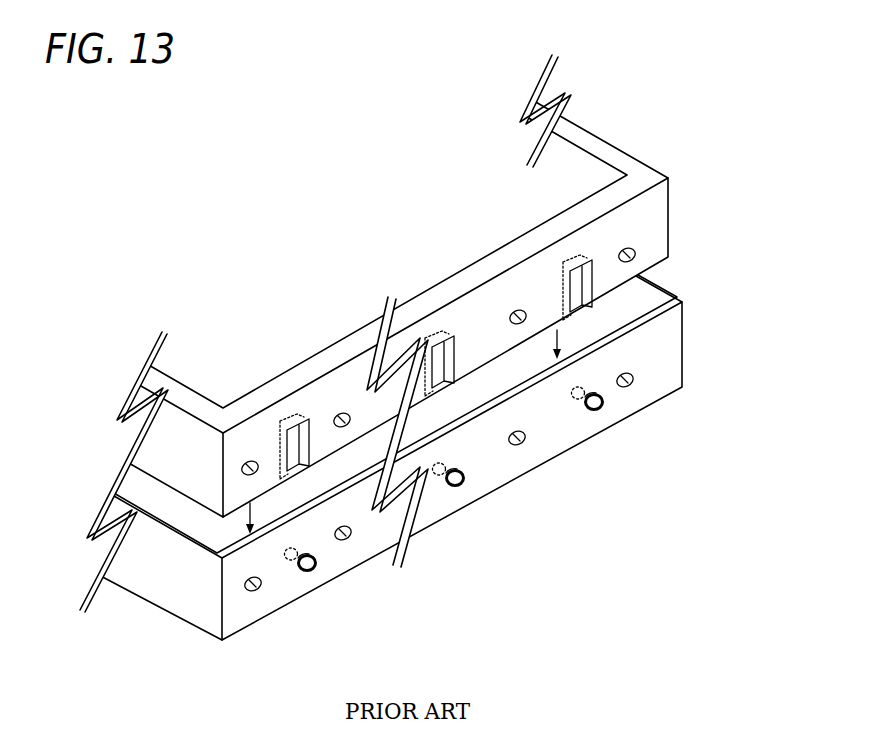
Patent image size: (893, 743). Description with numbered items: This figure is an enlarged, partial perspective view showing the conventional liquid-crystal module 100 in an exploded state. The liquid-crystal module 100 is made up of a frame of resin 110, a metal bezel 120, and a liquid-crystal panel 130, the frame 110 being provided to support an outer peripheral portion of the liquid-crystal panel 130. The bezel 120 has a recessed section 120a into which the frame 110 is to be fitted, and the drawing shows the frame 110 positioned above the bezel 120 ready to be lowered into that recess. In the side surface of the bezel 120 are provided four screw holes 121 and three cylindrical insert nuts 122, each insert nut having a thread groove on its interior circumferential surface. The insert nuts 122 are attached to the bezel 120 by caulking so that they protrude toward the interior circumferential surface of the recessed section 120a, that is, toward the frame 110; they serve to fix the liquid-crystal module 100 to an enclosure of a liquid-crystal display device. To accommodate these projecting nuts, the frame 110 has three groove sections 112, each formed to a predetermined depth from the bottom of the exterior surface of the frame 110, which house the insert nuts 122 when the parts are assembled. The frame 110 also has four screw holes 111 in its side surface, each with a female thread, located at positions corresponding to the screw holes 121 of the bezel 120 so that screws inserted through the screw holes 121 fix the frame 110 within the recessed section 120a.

The liquid-crystal module 100 is at (630, 130).
The frame 110 is at (655, 218).
The screw holes 111 is at (636, 254).
The groove sections 112 is at (579, 308).
The bezel 120 is at (670, 334).
The recessed section 120a is at (644, 303).
The screw holes 121 is at (628, 386).
The insert nuts 122 is at (597, 408).
The liquid-crystal panel 130 is at (341, 253).